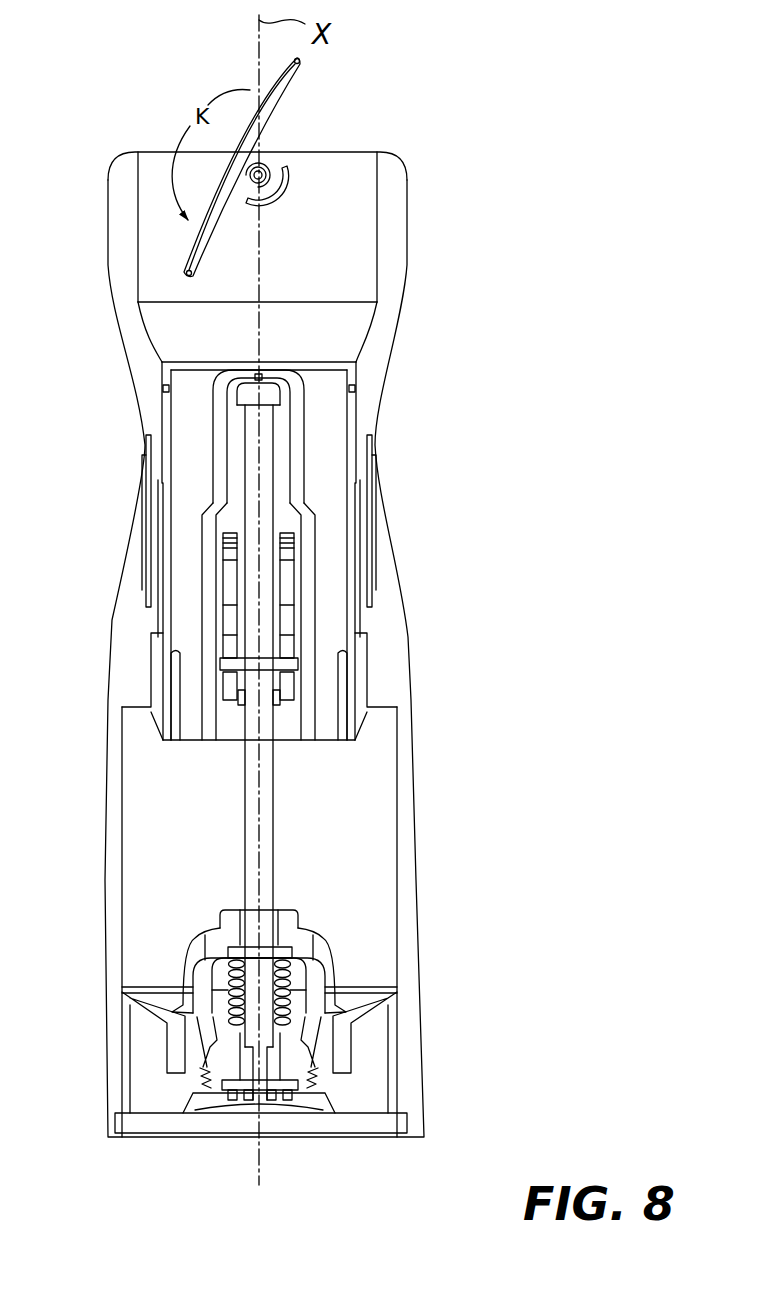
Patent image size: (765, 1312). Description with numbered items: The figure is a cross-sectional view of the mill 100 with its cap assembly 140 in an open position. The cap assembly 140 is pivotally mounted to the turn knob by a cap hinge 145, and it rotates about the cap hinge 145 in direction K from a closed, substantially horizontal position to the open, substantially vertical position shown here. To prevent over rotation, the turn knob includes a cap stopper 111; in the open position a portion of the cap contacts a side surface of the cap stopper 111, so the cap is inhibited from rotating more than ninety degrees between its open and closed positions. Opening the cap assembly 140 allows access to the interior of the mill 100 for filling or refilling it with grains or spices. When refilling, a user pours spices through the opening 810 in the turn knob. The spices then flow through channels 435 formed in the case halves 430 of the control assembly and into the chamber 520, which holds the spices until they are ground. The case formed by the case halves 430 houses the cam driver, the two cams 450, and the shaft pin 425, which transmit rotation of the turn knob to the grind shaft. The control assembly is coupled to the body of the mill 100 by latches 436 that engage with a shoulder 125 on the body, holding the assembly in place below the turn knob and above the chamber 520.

The mill 100 is at (462, 112).
The cap stopper 111 is at (278, 195).
The shoulder 125 is at (379, 706).
The cap assembly 140 is at (172, 112).
The cap hinge 145 is at (266, 180).
The shaft pin 425 is at (302, 670).
The case halves 430 is at (165, 515).
The channels 435 is at (190, 438).
The latches 436 is at (367, 734).
The cams 450 is at (230, 580).
The chamber 520 is at (365, 875).
The opening 810 is at (349, 202).